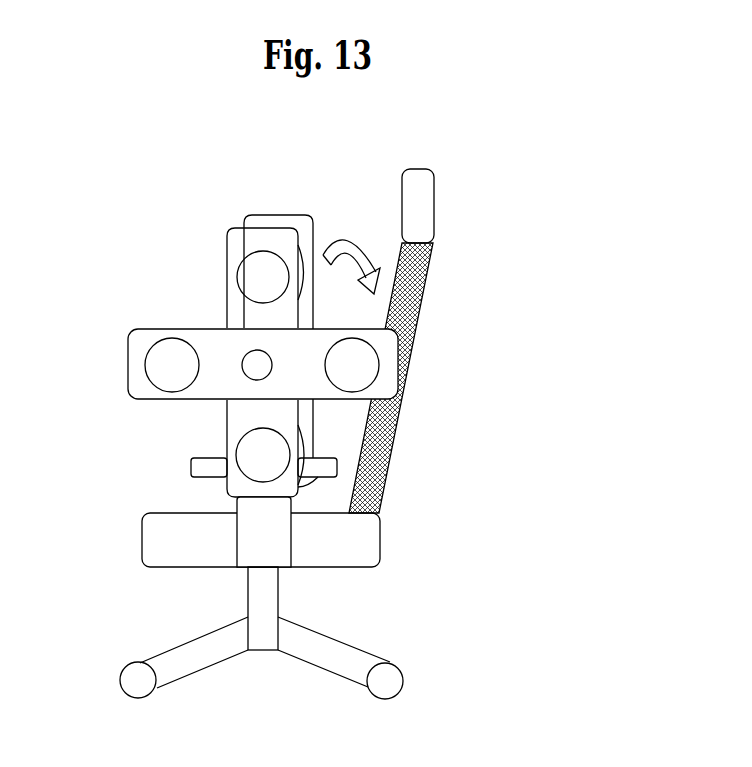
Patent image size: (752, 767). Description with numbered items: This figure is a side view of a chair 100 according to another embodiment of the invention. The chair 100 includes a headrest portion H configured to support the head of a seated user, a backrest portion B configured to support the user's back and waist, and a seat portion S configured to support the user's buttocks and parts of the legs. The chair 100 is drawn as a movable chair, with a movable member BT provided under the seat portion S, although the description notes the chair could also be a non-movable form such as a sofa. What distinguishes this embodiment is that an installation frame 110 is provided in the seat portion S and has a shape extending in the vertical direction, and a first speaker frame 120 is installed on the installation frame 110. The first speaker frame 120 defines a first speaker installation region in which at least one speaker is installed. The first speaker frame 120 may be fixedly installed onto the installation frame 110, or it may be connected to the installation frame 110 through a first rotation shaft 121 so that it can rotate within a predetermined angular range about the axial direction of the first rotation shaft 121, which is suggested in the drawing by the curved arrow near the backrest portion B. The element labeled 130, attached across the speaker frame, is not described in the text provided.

The chair 100 is at (597, 142).
The installation frame 110 is at (275, 543).
The first speaker frame 120 is at (388, 387).
The first rotation shaft 121 is at (253, 365).
The sensor bar 130 is at (160, 350).
The headrest portion H is at (423, 203).
The backrest portion B is at (395, 442).
The seat portion S is at (157, 545).
The movable member BT is at (269, 598).